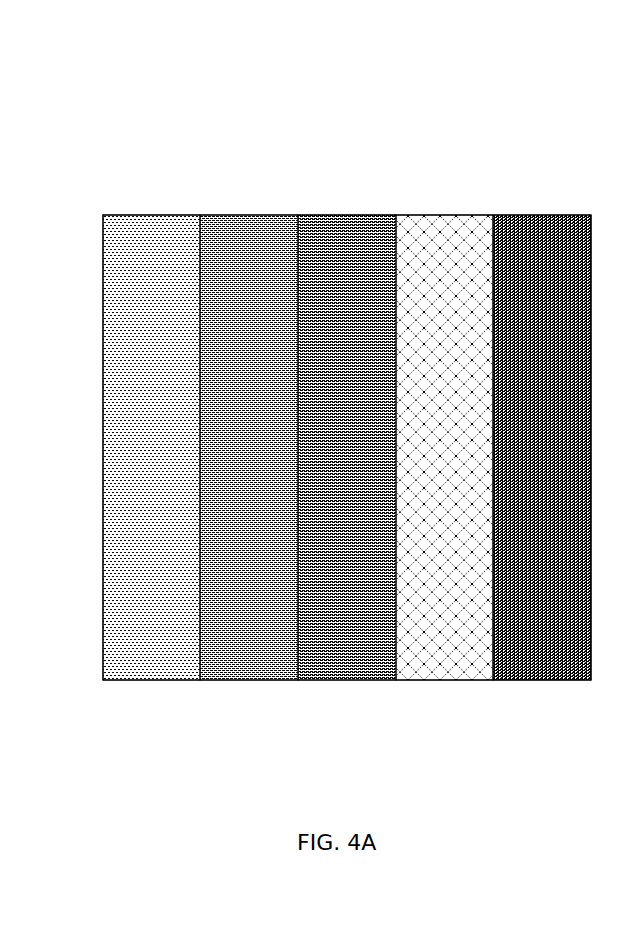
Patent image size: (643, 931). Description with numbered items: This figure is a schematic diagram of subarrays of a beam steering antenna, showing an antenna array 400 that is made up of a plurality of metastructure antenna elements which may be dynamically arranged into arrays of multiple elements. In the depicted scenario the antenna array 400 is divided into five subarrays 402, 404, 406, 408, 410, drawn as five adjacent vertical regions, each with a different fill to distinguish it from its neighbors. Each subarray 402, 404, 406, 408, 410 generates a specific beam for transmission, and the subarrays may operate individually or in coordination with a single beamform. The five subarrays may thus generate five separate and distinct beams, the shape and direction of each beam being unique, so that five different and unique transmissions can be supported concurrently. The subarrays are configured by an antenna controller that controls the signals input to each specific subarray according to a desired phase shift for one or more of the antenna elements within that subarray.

The antenna array 400 is at (333, 100).
The subarray 402 is at (150, 214).
The subarray 404 is at (238, 214).
The subarray 406 is at (343, 214).
The subarray 408 is at (443, 214).
The subarray 410 is at (542, 214).